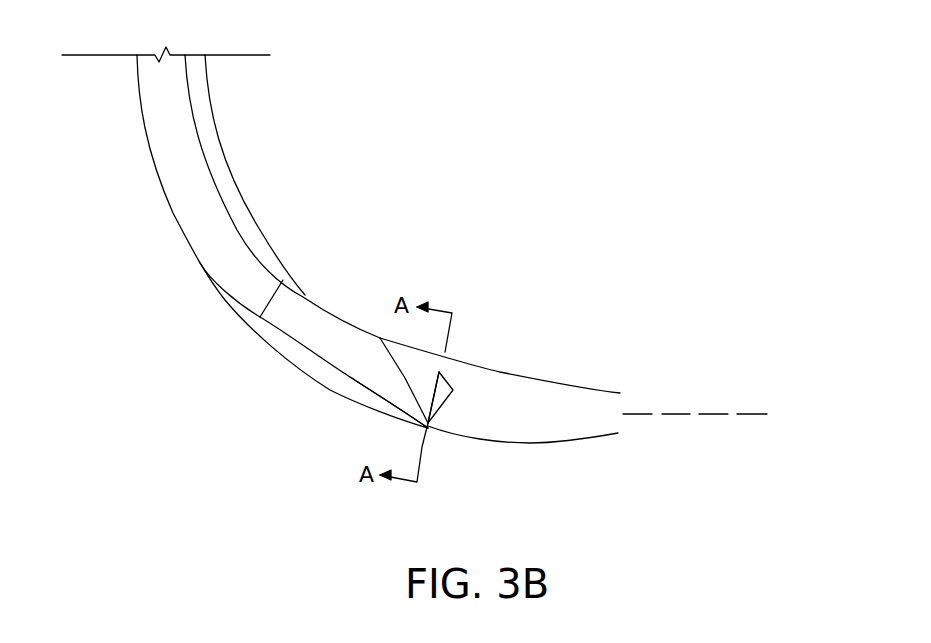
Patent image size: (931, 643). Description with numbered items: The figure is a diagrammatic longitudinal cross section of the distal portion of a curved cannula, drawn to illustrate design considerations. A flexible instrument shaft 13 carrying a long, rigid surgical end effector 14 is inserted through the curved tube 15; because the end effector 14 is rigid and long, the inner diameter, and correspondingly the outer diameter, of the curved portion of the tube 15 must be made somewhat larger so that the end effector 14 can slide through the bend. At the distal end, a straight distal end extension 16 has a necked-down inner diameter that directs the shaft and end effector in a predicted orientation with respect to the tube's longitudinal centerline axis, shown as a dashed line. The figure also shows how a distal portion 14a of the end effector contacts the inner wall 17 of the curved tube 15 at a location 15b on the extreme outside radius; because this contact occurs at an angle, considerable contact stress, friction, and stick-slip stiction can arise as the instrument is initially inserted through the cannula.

The flexible instrument shaft 13 is at (170, 112).
The rigid surgical end effector 14 is at (293, 300).
The distal portion of the end effector 14a is at (415, 407).
The curved tube 15 is at (270, 245).
The contact location 15b is at (426, 428).
The straight distal end extension 16 is at (570, 382).
The inner wall 17 is at (458, 427).